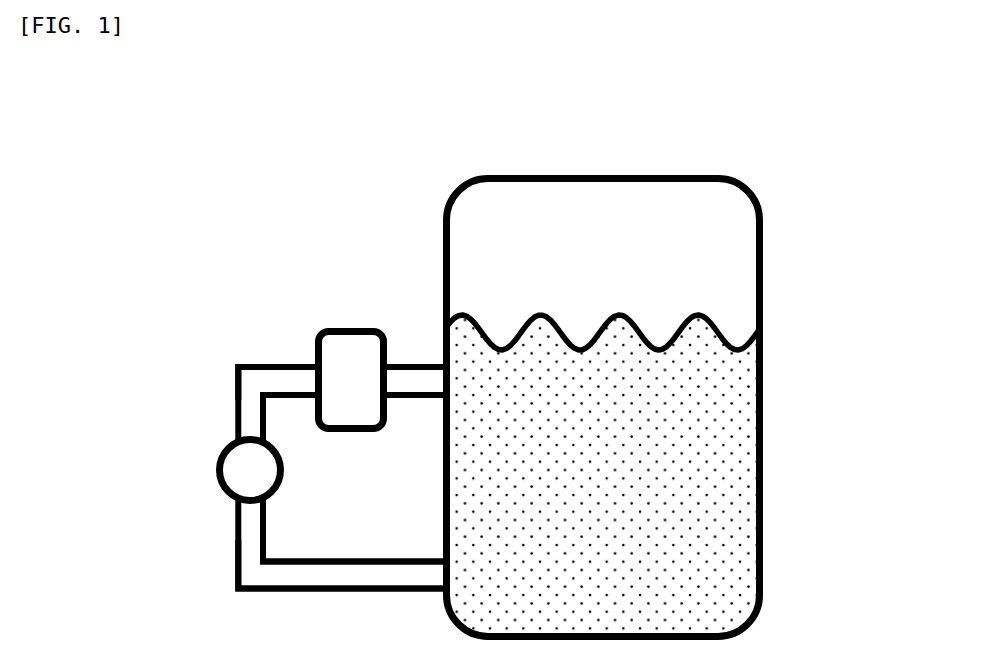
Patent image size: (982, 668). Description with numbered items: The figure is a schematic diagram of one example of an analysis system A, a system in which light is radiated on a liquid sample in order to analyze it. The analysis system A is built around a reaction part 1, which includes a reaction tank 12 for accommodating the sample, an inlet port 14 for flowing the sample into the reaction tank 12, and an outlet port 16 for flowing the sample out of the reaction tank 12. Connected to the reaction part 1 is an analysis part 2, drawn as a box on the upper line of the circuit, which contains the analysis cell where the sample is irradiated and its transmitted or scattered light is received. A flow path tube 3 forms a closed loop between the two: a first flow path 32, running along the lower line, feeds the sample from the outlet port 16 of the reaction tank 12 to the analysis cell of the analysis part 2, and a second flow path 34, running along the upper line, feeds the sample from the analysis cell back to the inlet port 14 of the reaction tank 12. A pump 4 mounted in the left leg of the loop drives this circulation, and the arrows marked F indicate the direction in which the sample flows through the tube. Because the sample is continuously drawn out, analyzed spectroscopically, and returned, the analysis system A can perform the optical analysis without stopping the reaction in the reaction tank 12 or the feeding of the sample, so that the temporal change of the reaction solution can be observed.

The analysis system A is at (232, 183).
The reaction part 1 is at (671, 424).
The reaction tank 12 is at (603, 491).
The analysis part 2 is at (348, 327).
The flow path tube 3 is at (272, 507).
The second flow path 34 is at (233, 405).
The first flow path 32 is at (360, 590).
The pump 4 is at (285, 472).
The inlet port 14 is at (438, 364).
The outlet port 16 is at (442, 559).
The flow direction F is at (293, 352).